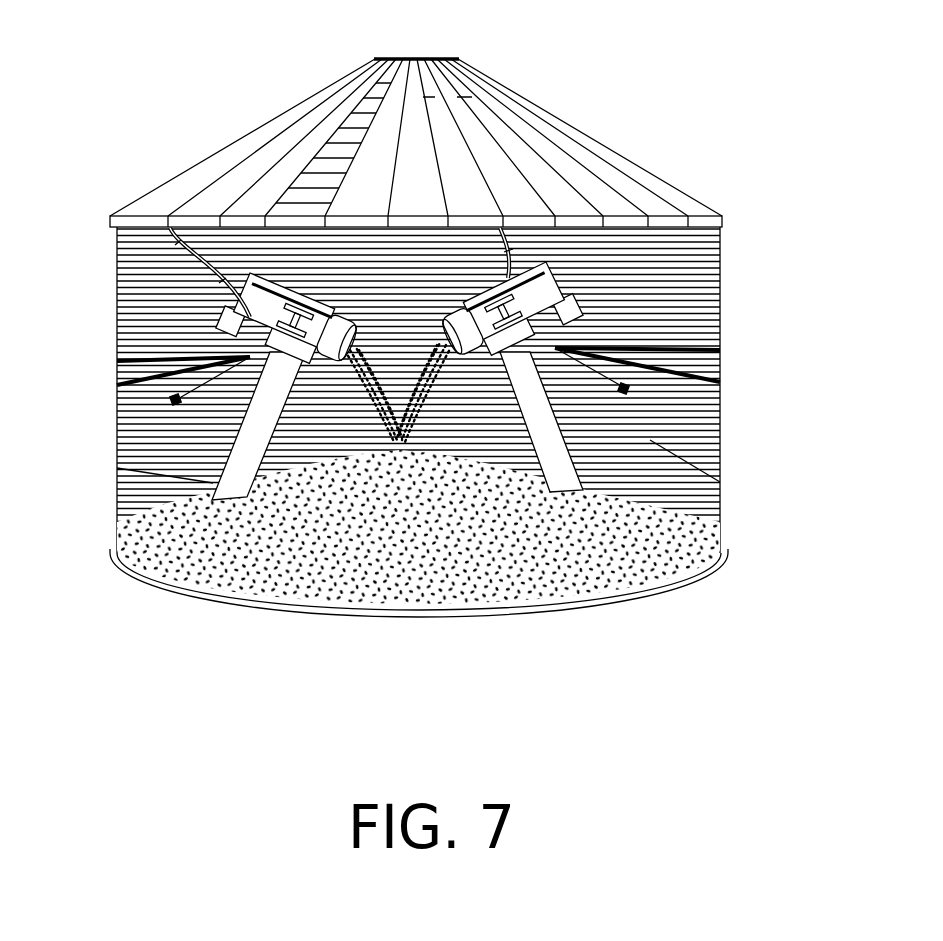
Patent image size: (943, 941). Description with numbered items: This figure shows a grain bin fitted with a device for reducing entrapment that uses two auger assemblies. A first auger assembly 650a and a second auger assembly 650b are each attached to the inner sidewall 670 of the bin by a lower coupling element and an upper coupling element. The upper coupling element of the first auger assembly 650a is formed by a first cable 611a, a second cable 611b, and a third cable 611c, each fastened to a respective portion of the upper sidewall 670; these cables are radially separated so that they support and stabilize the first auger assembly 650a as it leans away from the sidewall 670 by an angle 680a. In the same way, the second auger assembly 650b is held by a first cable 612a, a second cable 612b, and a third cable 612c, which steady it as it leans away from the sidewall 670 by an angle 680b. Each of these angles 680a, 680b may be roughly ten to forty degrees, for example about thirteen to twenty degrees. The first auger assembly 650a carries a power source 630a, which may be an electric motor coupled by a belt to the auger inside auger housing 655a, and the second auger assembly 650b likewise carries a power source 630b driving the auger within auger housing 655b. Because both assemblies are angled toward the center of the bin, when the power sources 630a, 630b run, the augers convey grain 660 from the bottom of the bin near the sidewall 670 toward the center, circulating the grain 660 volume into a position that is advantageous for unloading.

The first auger assembly 650a is at (283, 272).
The second auger assembly 650b is at (540, 265).
The power source 630a is at (220, 320).
The power source 630b is at (583, 309).
The first cable 611a is at (168, 360).
The second cable 611b is at (142, 383).
The third cable 611c is at (175, 404).
The first cable 612a is at (693, 347).
The second cable 612b is at (688, 376).
The third cable 612c is at (628, 388).
The auger housing 655a is at (233, 463).
The auger housing 655b is at (583, 463).
The grain 660 is at (420, 533).
The inner sidewall 670 is at (655, 500).
The angle 680a is at (215, 483).
The angle 680b is at (720, 482).